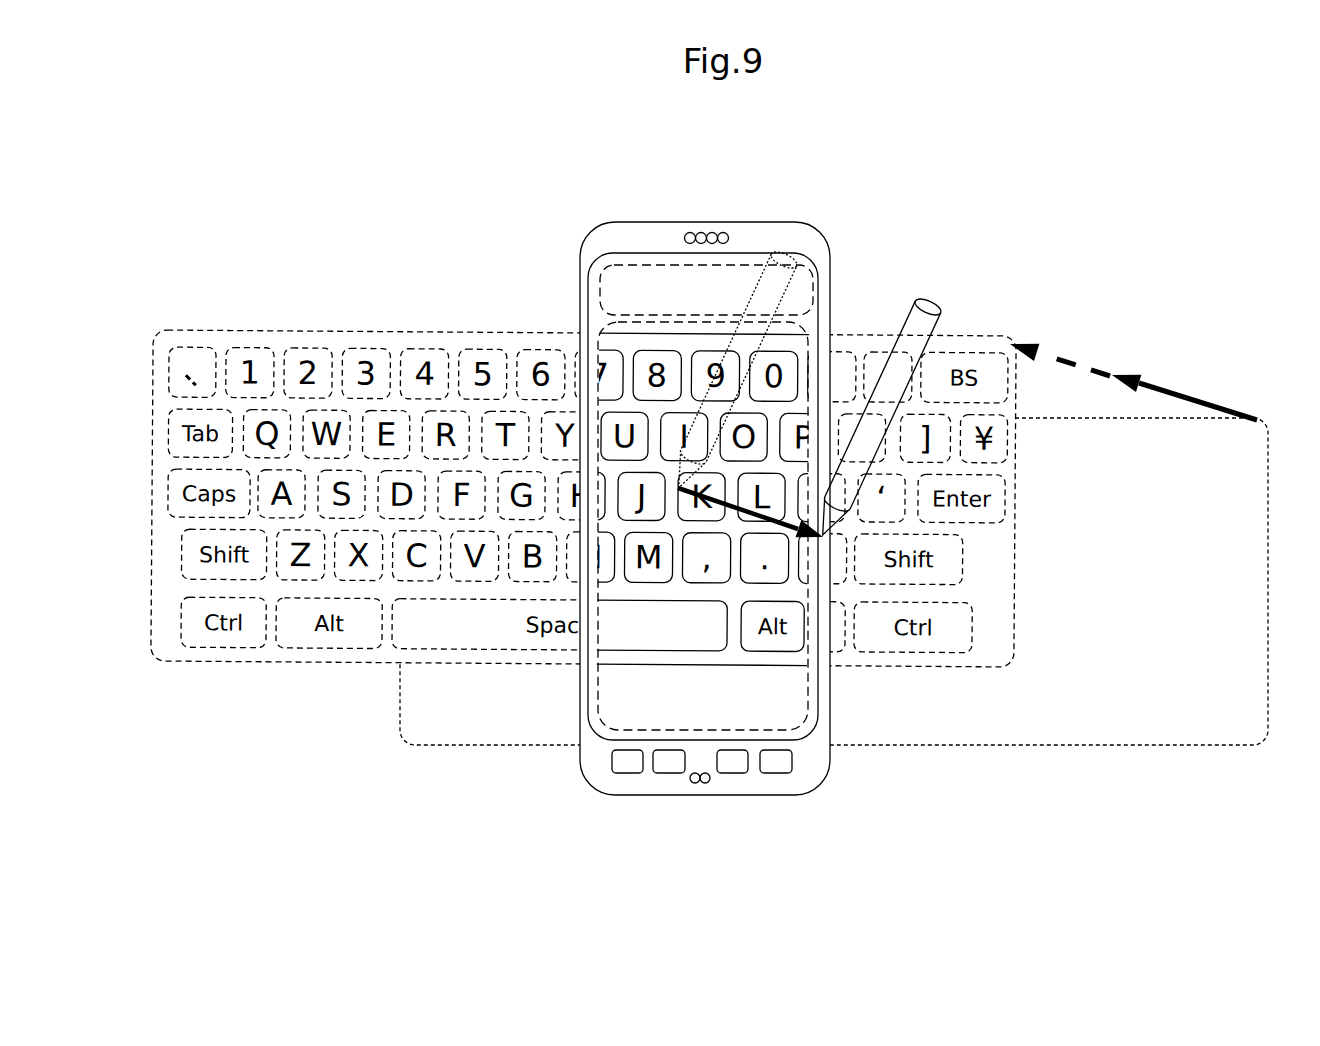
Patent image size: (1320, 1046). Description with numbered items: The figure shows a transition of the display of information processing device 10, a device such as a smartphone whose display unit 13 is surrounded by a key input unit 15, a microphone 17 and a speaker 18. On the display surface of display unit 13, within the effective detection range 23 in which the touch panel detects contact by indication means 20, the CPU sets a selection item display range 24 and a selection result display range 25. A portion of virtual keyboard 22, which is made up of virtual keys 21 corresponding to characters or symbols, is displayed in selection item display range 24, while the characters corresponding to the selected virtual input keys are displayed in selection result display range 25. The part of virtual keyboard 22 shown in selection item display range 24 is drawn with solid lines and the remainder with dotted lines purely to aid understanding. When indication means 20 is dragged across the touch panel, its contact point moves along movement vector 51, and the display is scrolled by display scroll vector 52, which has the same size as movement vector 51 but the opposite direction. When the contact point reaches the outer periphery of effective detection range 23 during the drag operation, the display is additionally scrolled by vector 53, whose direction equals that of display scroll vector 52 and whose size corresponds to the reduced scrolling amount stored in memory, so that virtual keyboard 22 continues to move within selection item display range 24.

The information processing device 10 is at (777, 222).
The display unit 13 is at (739, 780).
The key input unit 15 is at (778, 775).
The microphone 17 is at (706, 782).
The speaker 18 is at (700, 232).
The indication means 20 is at (932, 298).
The virtual keys 21 is at (962, 352).
The virtual keyboard 22 is at (998, 340).
The effective detection range 23 is at (815, 693).
The selection item display range 24 is at (607, 337).
The selection result display range 25 is at (818, 284).
The movement vector 51 is at (751, 514).
The display scroll vector 52 is at (1190, 398).
The vector 53 is at (1062, 353).